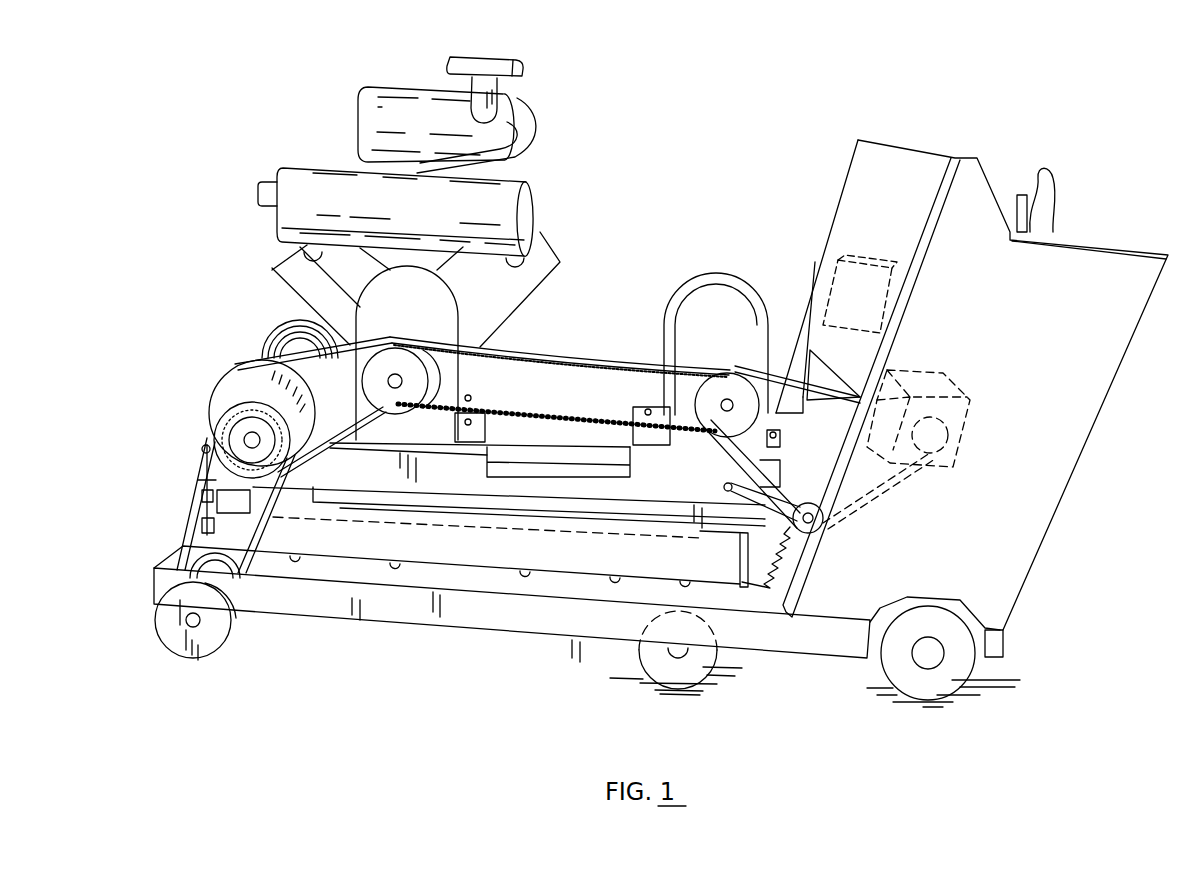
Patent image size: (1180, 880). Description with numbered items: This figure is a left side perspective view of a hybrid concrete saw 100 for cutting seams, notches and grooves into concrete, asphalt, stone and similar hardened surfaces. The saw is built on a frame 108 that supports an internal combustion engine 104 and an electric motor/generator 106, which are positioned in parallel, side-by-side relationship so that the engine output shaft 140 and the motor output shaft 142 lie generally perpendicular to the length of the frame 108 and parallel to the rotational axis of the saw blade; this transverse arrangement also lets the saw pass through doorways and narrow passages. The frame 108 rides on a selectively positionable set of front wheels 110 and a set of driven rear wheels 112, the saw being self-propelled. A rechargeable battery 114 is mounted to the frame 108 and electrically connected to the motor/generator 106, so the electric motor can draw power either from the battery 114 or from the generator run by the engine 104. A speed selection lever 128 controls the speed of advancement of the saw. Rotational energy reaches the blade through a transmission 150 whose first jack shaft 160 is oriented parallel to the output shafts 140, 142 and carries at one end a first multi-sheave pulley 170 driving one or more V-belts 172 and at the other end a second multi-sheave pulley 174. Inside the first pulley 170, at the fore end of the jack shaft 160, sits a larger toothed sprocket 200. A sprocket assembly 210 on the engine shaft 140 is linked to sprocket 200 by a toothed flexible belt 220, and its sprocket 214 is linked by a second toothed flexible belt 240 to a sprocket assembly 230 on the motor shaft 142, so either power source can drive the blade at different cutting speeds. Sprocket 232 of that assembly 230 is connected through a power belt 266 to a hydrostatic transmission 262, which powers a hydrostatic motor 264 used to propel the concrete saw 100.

The hybrid concrete saw 100 is at (972, 351).
The internal combustion engine 104 is at (550, 160).
The electric motor/generator 106 is at (725, 240).
The frame 108 is at (496, 533).
The front wheels 110 is at (647, 660).
The rear wheels 112 is at (893, 668).
The rechargeable battery 114 is at (889, 306).
The speed selection lever 128 is at (1077, 205).
The output shaft of the engine 140 is at (395, 388).
The output shaft of the electric motor 142 is at (727, 398).
The transmission 150 is at (264, 318).
The first jack shaft 160 is at (229, 419).
The first multi-sheave pulley 170 is at (242, 440).
The V-belts 172 is at (198, 513).
The second multi-sheave pulley 174 is at (285, 325).
The sprocket 200 is at (226, 396).
The sprocket assembly 210 is at (437, 382).
The sprocket 214 is at (417, 387).
The flexible belt 220 is at (412, 382).
The sprocket assembly 230 is at (725, 384).
The sprocket 232 is at (698, 374).
The flexible belt 240 is at (585, 356).
The hydrostatic transmission 262 is at (880, 505).
The hydrostatic motor 264 is at (965, 391).
The power belt 266 is at (760, 488).